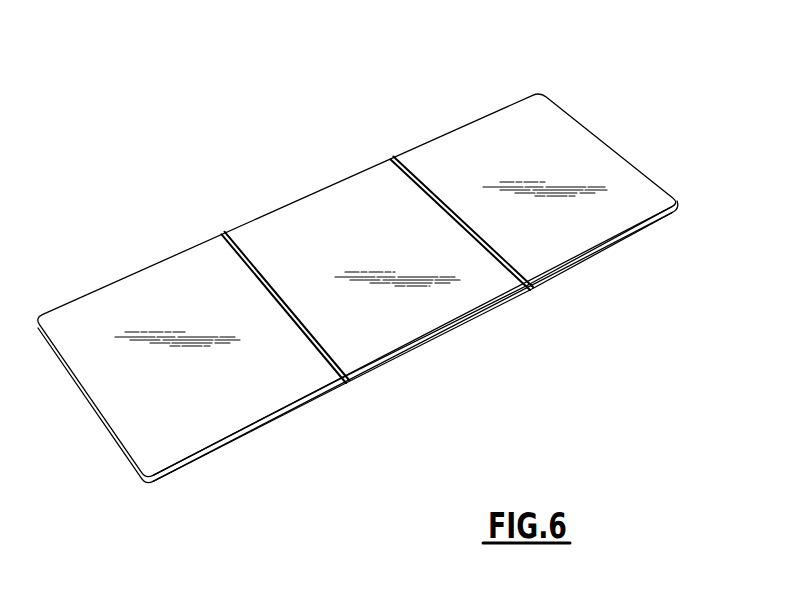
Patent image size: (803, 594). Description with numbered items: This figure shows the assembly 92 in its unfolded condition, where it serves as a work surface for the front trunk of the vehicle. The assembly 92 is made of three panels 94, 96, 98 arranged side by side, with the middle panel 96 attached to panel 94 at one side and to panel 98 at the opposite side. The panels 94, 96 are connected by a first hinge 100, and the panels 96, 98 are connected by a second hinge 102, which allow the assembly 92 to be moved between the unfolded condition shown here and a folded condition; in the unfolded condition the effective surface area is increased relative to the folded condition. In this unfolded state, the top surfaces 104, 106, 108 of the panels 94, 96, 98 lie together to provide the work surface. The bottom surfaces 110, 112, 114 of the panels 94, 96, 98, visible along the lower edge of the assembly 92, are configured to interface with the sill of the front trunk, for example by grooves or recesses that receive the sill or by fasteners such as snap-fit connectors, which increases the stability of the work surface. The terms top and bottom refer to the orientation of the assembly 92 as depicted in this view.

The assembly 92 is at (637, 71).
The panel 94 is at (189, 483).
The panel 96 is at (417, 367).
The panel 98 is at (586, 283).
The first hinge 100 is at (320, 343).
The second hinge 102 is at (495, 250).
The top surface 104 is at (152, 405).
The top surface 106 is at (311, 218).
The top surface 108 is at (478, 145).
The bottom surface 110 is at (225, 466).
The bottom surface 112 is at (377, 384).
The bottom surface 114 is at (635, 254).